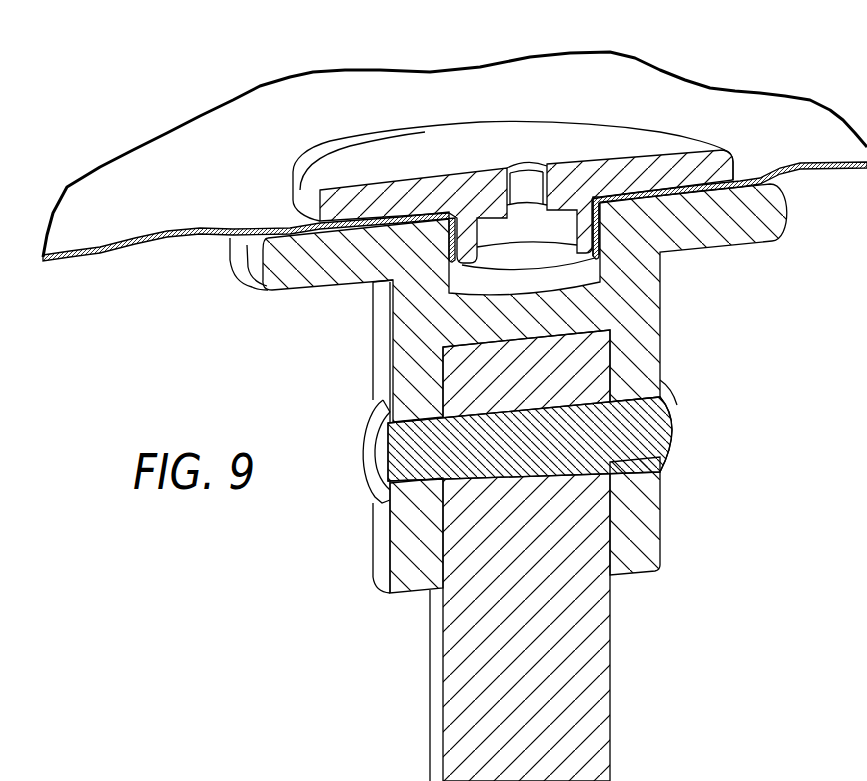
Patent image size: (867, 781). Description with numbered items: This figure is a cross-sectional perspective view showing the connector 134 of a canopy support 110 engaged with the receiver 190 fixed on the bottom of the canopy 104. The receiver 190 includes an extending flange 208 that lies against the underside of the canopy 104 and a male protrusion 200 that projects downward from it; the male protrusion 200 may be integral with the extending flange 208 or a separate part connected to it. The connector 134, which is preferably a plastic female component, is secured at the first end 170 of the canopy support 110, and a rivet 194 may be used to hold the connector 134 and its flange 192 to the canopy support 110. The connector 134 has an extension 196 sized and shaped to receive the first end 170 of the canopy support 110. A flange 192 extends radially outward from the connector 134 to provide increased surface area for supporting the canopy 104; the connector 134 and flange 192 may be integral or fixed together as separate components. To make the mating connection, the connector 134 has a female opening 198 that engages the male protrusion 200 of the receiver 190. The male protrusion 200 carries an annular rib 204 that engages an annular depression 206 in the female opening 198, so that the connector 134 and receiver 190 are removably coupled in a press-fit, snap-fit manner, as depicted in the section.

The canopy 104 is at (143, 168).
The canopy support 110 is at (587, 648).
The connector 134 is at (380, 380).
The first end 170 is at (462, 537).
The receiver 190 is at (537, 137).
The flange 192 is at (247, 268).
The rivet 194 is at (663, 425).
The extension 196 is at (653, 510).
The female opening 198 is at (563, 258).
The male protrusion 200 is at (583, 218).
The annular rib 204 is at (598, 248).
The annular depression 206 is at (463, 273).
The extending flange 208 is at (680, 135).